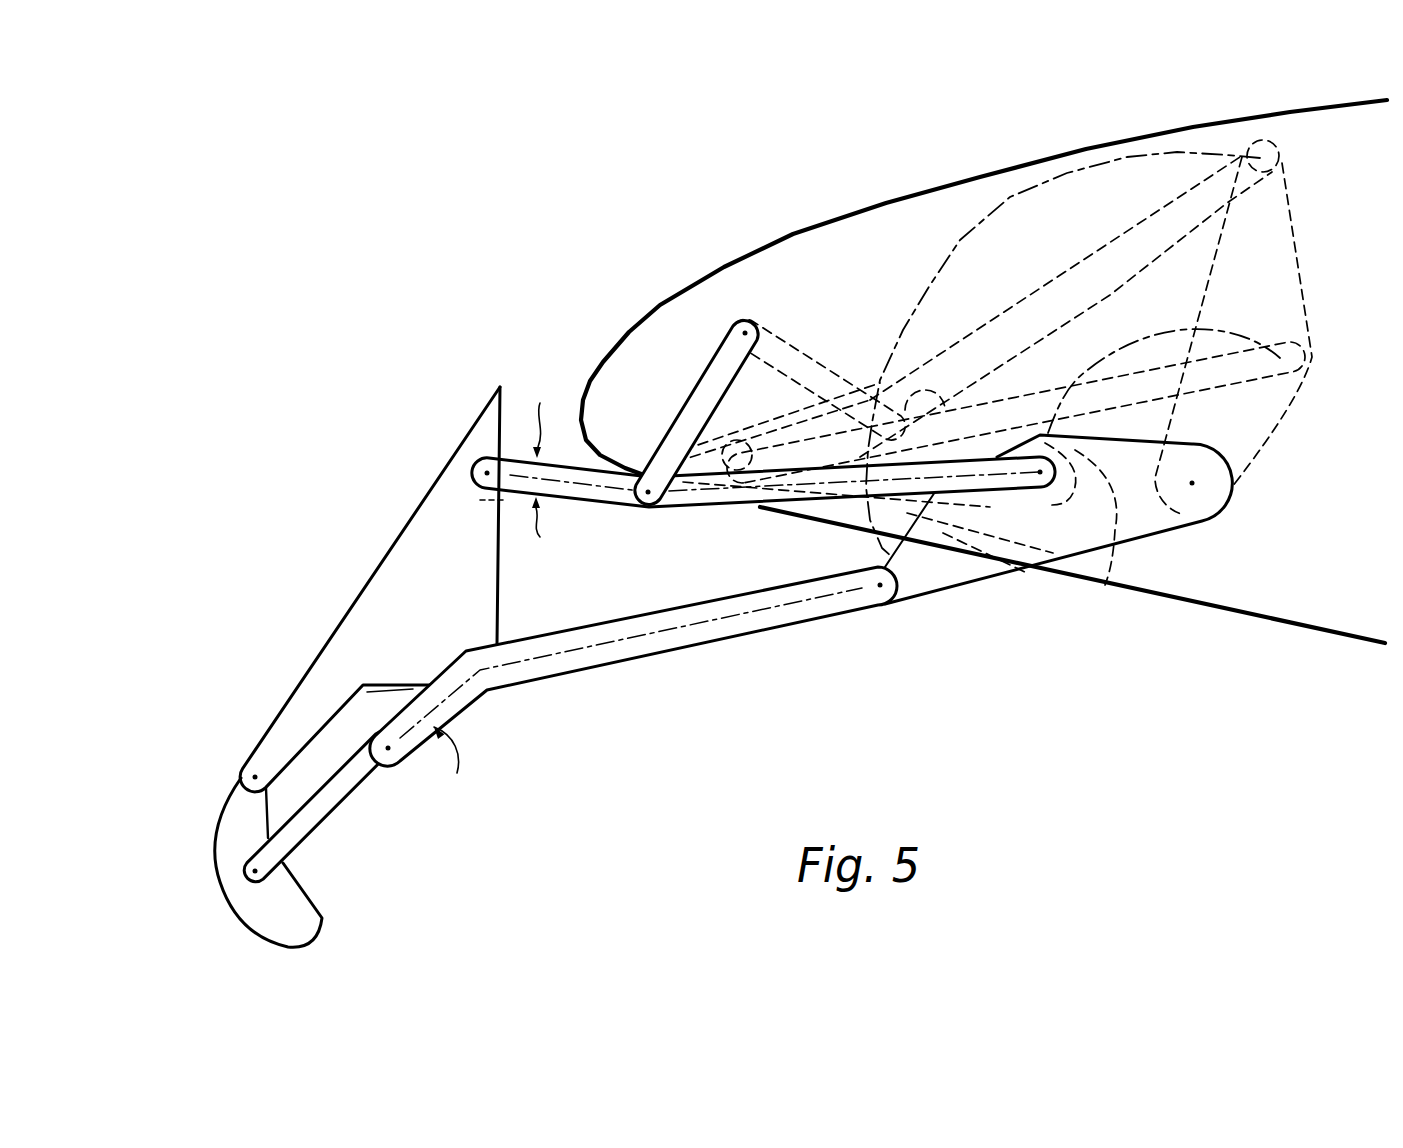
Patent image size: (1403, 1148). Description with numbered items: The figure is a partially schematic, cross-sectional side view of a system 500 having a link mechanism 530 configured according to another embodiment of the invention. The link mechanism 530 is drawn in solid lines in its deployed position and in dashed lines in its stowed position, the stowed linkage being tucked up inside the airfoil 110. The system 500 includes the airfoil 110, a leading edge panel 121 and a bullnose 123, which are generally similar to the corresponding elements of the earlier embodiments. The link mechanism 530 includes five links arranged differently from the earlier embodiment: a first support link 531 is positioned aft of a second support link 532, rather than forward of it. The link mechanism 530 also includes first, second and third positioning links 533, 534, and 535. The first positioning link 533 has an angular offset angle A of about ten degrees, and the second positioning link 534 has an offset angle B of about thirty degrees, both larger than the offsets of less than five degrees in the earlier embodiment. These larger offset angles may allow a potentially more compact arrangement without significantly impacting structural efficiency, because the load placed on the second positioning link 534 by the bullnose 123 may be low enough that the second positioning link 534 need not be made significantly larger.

The airfoil 110 is at (1290, 110).
The system 500 is at (375, 408).
The leading edge panel 121 is at (271, 723).
The bullnose 123 is at (267, 935).
The link mechanism 530 is at (778, 511).
The first support link 531 is at (968, 583).
The second support link 532 is at (703, 372).
The first positioning link 533 is at (693, 500).
The second positioning link 534 is at (612, 665).
The third positioning link 535 is at (330, 813).